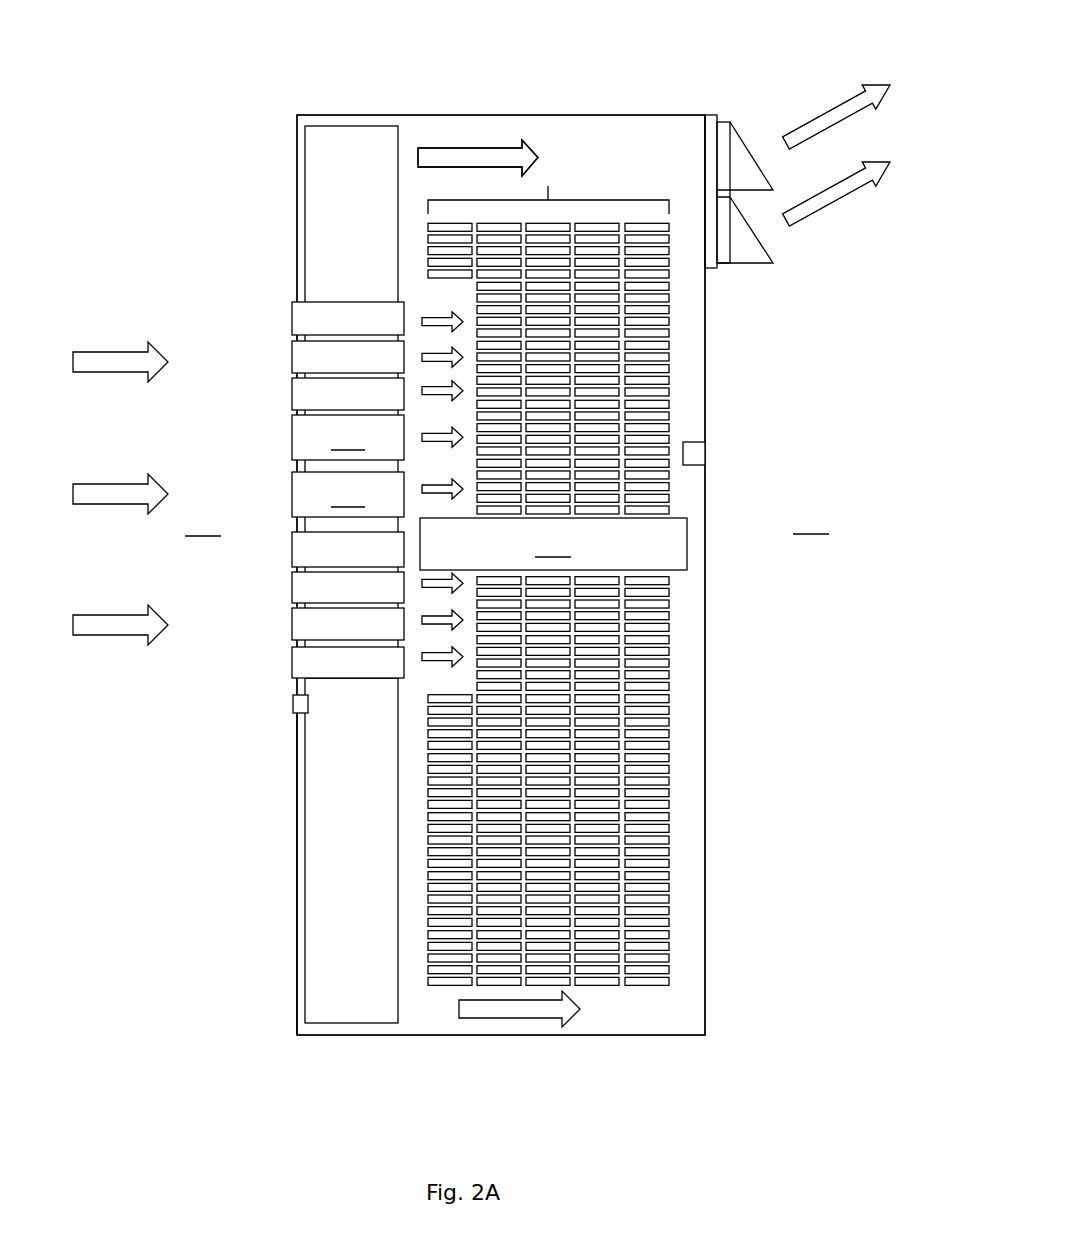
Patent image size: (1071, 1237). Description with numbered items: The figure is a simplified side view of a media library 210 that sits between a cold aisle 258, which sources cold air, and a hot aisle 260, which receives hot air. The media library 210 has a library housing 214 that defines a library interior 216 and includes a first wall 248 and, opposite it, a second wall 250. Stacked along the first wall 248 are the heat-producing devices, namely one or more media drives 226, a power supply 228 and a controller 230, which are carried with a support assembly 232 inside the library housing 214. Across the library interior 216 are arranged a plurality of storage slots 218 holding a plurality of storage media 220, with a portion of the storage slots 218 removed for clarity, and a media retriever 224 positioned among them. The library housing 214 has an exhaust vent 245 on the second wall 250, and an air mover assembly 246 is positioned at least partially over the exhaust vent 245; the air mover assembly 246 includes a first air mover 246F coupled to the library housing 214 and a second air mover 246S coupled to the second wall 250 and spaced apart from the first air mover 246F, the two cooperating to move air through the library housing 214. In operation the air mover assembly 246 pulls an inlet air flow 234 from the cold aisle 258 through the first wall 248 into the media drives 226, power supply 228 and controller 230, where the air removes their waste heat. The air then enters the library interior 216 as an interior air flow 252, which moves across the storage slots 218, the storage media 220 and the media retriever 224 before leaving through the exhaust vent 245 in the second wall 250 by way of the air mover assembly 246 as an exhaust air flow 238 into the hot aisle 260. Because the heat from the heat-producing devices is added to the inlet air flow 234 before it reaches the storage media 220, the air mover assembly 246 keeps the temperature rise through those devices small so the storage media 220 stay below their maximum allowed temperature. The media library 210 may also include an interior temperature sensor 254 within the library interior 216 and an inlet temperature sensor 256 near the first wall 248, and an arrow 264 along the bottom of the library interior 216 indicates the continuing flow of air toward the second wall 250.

The media library 210 is at (280, 80).
The library housing 214 is at (349, 115).
The library interior 216 is at (448, 138).
The storage slots 218 is at (550, 175).
The storage media 220 is at (660, 497).
The media retriever 224 is at (553, 544).
The media drives 226 is at (257, 466).
The power supply 228 is at (348, 437).
The controller 230 is at (348, 494).
The support assembly 232 is at (320, 963).
The inlet air flow 234 is at (120, 352).
The exhaust air flow 238 is at (857, 195).
The exhaust vent 245 is at (703, 163).
The air mover assembly 246 is at (803, 153).
The first air mover 246F is at (747, 137).
The second air mover 246S is at (763, 263).
The first wall 248 is at (297, 1013).
The second wall 250 is at (702, 902).
The interior air flow 252 is at (485, 147).
The interior temperature sensor 254 is at (700, 448).
The inlet temperature sensor 256 is at (293, 713).
The cold aisle 258 is at (203, 525).
The hot aisle 260 is at (811, 523).
The bottom airflow 264 is at (528, 1014).